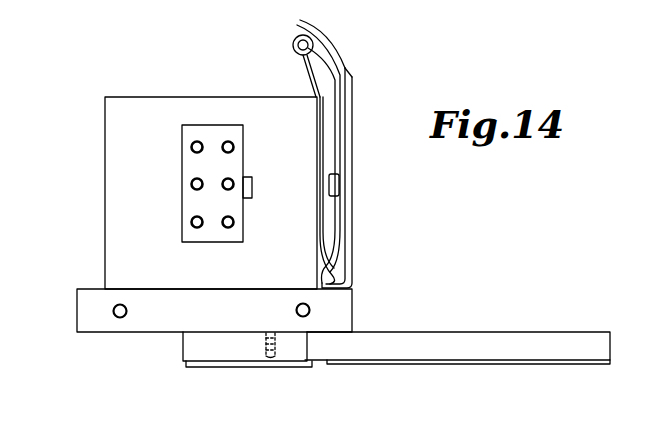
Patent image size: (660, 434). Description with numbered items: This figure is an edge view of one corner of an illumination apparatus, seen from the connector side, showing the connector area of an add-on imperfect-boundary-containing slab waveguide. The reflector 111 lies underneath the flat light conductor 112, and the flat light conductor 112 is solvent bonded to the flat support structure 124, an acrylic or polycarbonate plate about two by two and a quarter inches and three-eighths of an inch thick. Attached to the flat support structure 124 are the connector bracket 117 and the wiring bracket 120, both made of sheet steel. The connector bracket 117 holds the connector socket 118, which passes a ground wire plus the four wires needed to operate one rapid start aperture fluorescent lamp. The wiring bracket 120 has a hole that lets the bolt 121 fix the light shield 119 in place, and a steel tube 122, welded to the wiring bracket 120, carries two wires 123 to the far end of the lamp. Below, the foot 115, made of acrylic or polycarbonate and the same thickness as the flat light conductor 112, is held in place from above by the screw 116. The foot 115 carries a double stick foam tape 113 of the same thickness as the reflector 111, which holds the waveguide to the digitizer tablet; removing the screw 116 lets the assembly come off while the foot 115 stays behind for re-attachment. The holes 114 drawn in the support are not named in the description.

The reflector 111 is at (495, 365).
The flat light conductor 112 is at (480, 336).
The double stick foam tape 113 is at (186, 367).
The mounting holes 114 is at (113, 318).
The foot 115 is at (183, 345).
The screw 116 is at (264, 346).
The connector bracket 117 is at (106, 188).
The connector socket 118 is at (206, 142).
The light shield 119 is at (353, 232).
The wiring bracket 120 is at (333, 58).
The bolt 121 is at (347, 184).
The tube 122 is at (293, 42).
The wires 123 is at (292, 70).
The flat support structure 124 is at (78, 298).